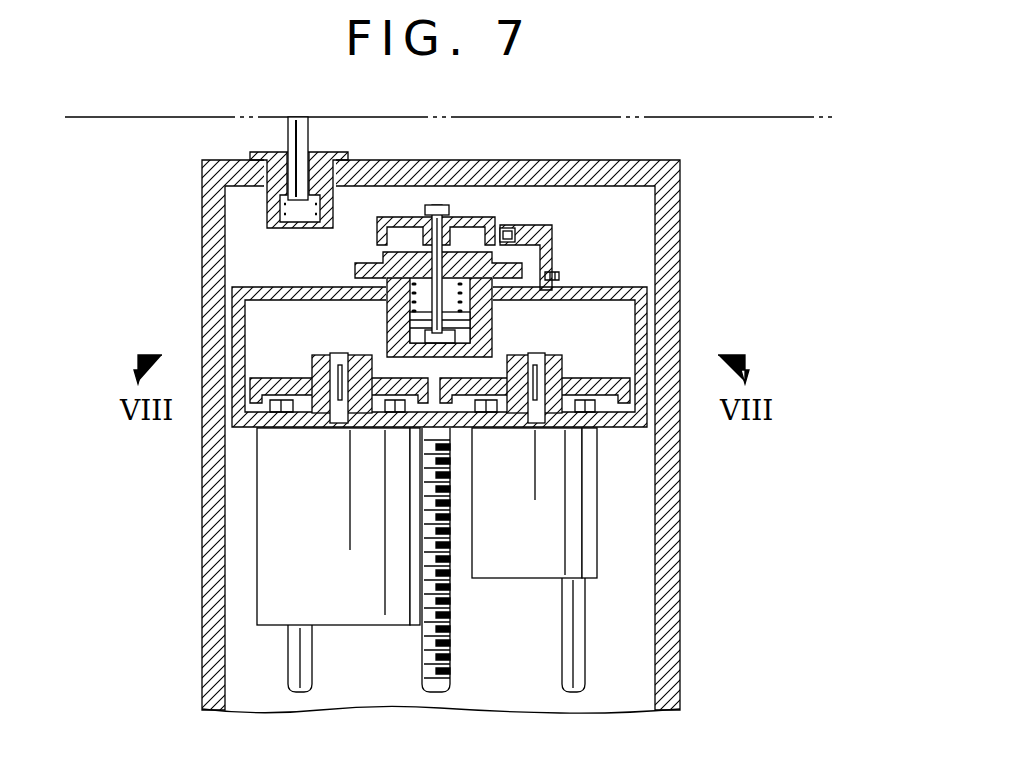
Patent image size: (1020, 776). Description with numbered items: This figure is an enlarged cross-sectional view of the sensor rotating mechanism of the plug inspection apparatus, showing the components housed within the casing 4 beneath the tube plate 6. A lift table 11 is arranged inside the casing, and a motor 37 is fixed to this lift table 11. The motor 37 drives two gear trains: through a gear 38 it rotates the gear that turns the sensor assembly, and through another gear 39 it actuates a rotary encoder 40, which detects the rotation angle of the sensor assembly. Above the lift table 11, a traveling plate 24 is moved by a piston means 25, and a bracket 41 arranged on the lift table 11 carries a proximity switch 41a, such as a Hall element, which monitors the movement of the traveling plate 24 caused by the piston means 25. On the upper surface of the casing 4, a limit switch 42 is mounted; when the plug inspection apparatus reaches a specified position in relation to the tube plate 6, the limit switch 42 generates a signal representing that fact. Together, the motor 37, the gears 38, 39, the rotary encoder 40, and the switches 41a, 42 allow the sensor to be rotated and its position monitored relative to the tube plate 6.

The casing 4 is at (575, 163).
The tube plate 6 is at (742, 118).
The lift table 11 is at (647, 423).
The traveling plate 24 is at (483, 217).
The piston means 25 is at (355, 270).
The motor 37 is at (583, 537).
The gear 38 is at (597, 378).
The gear 39 is at (258, 378).
The rotary encoder 40 is at (265, 537).
The bracket 41 is at (552, 252).
The proximity switch 41a is at (505, 228).
The limit switch 42 is at (287, 138).